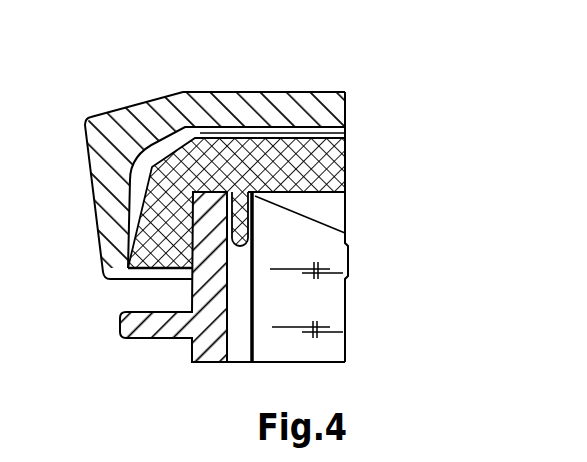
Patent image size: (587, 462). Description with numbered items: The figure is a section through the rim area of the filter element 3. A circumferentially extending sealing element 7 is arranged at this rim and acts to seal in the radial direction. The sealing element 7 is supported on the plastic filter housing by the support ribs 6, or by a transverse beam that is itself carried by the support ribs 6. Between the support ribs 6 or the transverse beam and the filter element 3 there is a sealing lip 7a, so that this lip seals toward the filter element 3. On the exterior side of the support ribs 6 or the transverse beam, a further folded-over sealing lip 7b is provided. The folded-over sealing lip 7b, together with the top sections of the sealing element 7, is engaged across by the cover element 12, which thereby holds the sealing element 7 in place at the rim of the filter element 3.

The cover element 12 is at (227, 105).
The sealing element 7 is at (335, 165).
The sealing lip 7a is at (238, 222).
The folded-over sealing lip 7b is at (152, 248).
The filter element 3 is at (327, 305).
The support ribs 6 is at (184, 352).